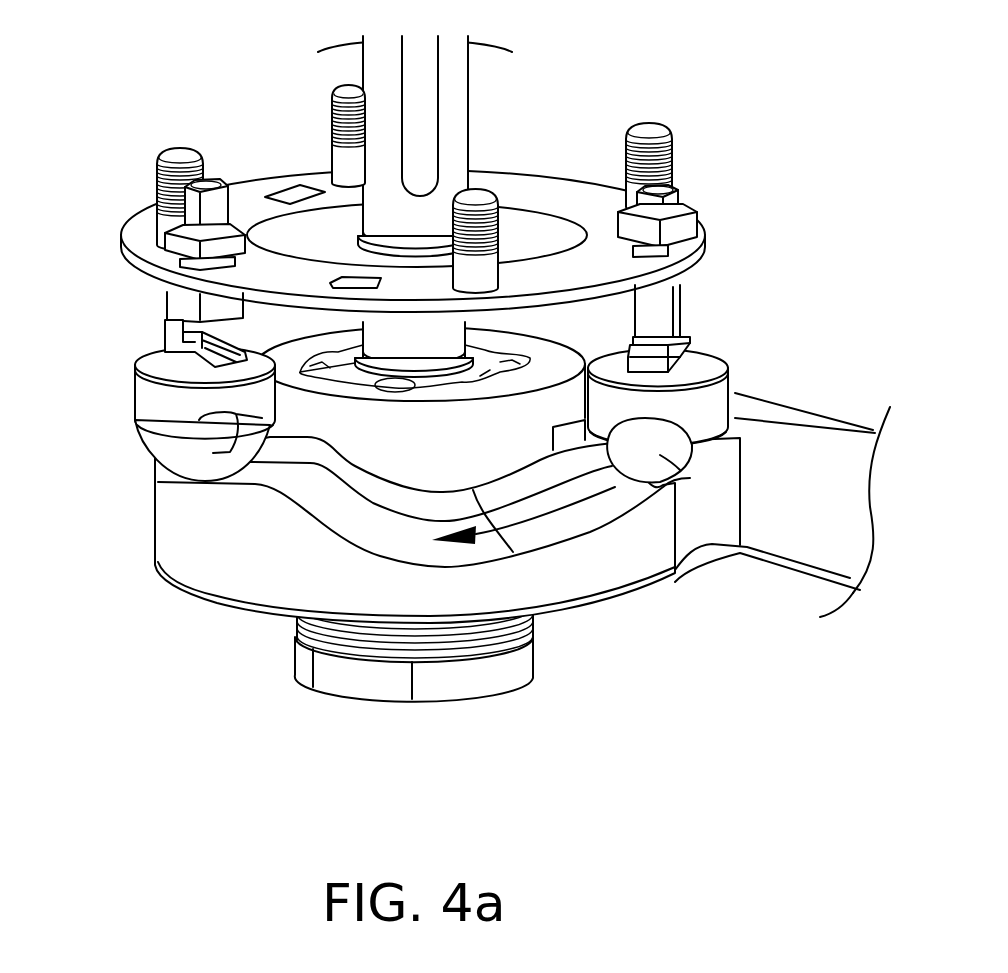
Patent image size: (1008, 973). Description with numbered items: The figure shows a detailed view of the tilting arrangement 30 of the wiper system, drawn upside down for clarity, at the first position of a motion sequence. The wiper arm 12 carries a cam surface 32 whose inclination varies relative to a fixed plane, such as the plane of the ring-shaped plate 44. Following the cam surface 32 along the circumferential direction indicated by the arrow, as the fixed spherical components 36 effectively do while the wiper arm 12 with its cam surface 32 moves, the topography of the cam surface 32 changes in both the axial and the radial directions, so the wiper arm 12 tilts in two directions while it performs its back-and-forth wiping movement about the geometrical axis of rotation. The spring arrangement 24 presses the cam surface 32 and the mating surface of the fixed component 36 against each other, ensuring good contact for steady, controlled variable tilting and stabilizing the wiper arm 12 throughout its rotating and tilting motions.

The tilting arrangement 30 is at (125, 70).
The ring-shaped plate 44 is at (533, 190).
The fixed spherical components 36 is at (660, 455).
The cam surface 32 is at (545, 537).
The wiper arm 12 is at (787, 503).
The spring arrangement 24 is at (440, 640).